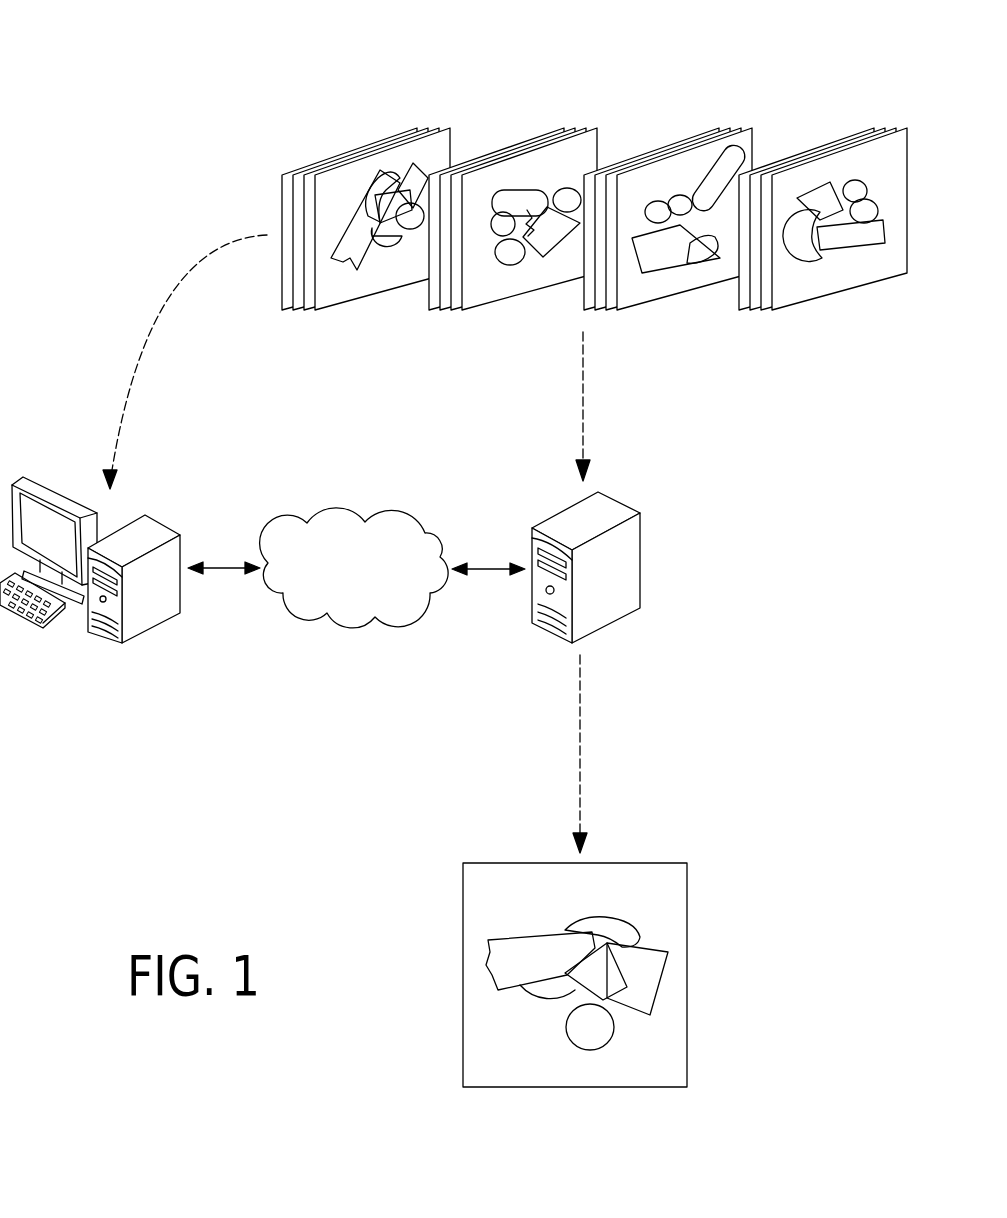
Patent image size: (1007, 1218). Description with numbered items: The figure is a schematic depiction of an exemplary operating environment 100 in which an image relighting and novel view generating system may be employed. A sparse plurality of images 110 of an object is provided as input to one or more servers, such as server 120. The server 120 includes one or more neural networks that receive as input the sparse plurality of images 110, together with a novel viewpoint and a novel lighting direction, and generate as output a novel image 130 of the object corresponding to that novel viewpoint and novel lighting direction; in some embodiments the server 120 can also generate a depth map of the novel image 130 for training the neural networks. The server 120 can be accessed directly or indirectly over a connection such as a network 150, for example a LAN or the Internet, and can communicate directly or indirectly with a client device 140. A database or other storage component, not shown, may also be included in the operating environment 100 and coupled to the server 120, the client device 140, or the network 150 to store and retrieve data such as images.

The operating environment 100 is at (52, 72).
The sparse plurality of images 110 is at (850, 309).
The server 120 is at (642, 552).
The novel image 130 is at (502, 862).
The client device 140 is at (105, 643).
The network 150 is at (335, 508).